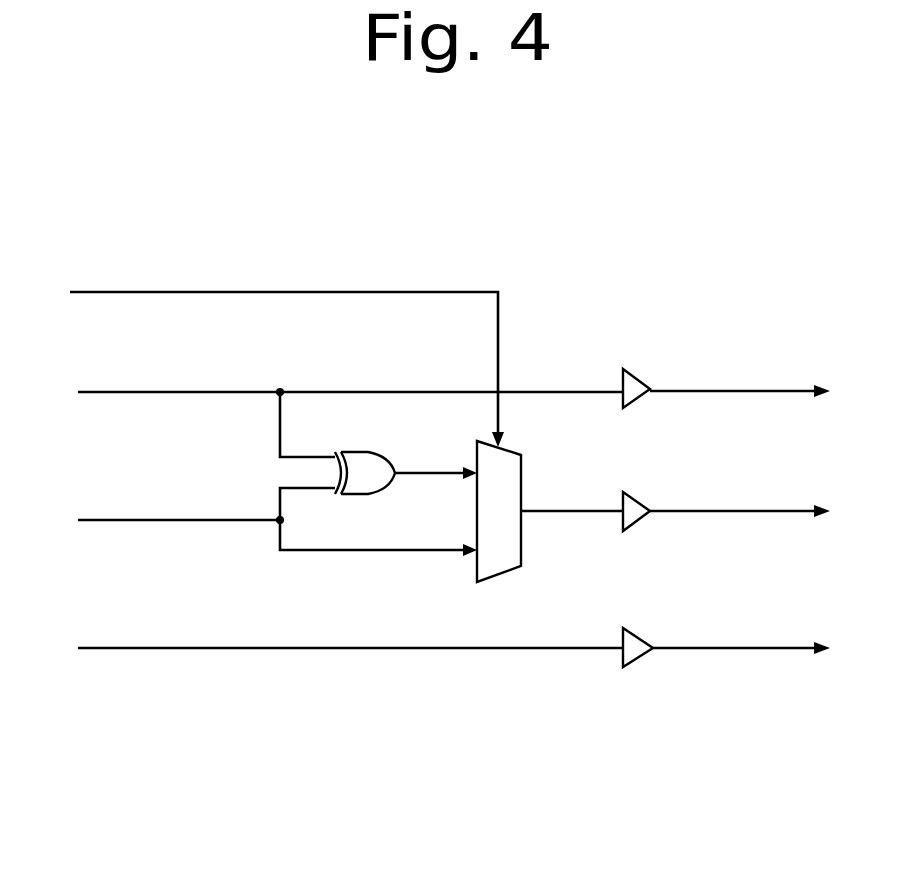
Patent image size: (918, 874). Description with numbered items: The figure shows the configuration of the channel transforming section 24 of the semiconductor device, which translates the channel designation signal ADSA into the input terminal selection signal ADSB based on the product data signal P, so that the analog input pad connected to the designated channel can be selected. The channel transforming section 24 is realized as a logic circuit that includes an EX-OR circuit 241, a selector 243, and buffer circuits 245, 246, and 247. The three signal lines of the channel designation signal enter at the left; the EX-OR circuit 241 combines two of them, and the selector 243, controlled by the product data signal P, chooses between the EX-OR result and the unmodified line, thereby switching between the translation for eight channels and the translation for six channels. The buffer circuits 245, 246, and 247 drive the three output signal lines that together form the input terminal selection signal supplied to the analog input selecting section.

The channel transforming section 24 is at (690, 278).
The EX-OR circuit 241 is at (363, 453).
The selector 243 is at (522, 455).
The buffer circuit 245 is at (641, 399).
The buffer circuit 246 is at (641, 522).
The buffer circuit 247 is at (641, 658).